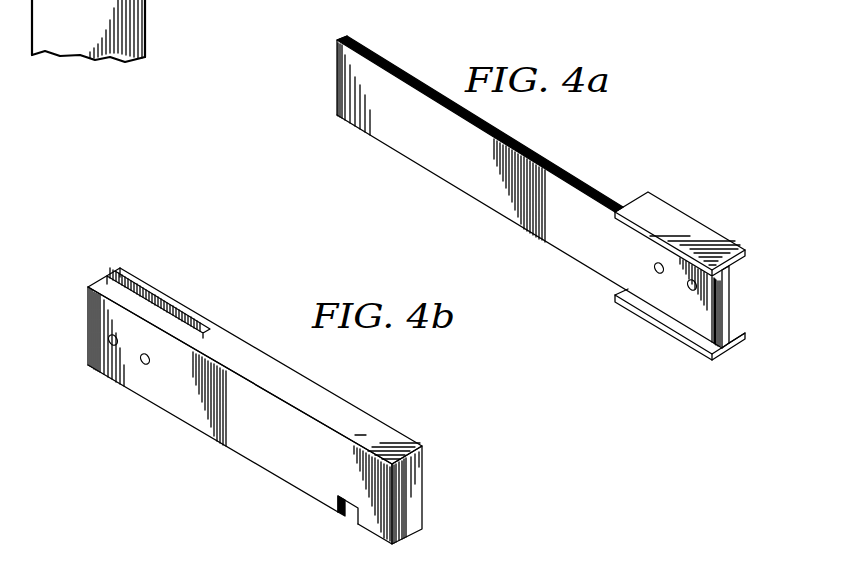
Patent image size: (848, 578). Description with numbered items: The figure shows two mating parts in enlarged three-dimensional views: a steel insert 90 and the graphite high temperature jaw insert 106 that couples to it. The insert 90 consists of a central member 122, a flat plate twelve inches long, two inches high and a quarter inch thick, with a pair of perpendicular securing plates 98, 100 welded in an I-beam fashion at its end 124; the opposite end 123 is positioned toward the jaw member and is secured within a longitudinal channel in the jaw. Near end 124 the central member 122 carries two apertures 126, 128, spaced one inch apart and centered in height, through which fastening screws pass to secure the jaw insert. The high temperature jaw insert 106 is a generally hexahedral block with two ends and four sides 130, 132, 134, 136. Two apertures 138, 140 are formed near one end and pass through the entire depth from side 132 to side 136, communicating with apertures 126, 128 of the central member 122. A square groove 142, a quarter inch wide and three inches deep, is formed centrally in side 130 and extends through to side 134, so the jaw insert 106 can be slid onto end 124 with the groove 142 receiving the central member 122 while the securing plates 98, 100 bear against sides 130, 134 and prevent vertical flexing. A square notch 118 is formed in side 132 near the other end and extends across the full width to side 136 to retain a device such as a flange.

In FIG. 4a, the insert 90 is at (659, 145).
In FIG. 4a, the perpendicular securing plate 98 is at (718, 230).
In FIG. 4a, the perpendicular securing plate 100 is at (737, 343).
In FIG. 4a, the central member 122 is at (430, 160).
In FIG. 4a, the end of central member 123 is at (337, 62).
In FIG. 4a, the end of central member 124 is at (733, 297).
In FIG. 4a, the aperture / end of jaw insert 126 is at (690, 291).
In FIG. 4b, the aperture / end of jaw insert 126 is at (415, 492).
In FIG. 4a, the aperture / end of jaw insert 128 is at (656, 274).
In FIG. 4b, the aperture / end of jaw insert 128 is at (97, 278).
In FIG. 4b, the high temperature jaw insert 106 is at (135, 495).
In FIG. 4b, the side of jaw insert 130 is at (237, 347).
In FIG. 4b, the side of jaw insert 132 is at (243, 445).
In FIG. 4b, the side of jaw insert 134 is at (265, 487).
In FIG. 4b, the side of jaw insert 136 is at (361, 400).
In FIG. 4b, the square notch 118 is at (348, 514).
In FIG. 4b, the square groove 142 is at (162, 315).
In FIG. 4b, the aperture 138 is at (144, 365).
In FIG. 4b, the aperture 140 is at (109, 340).